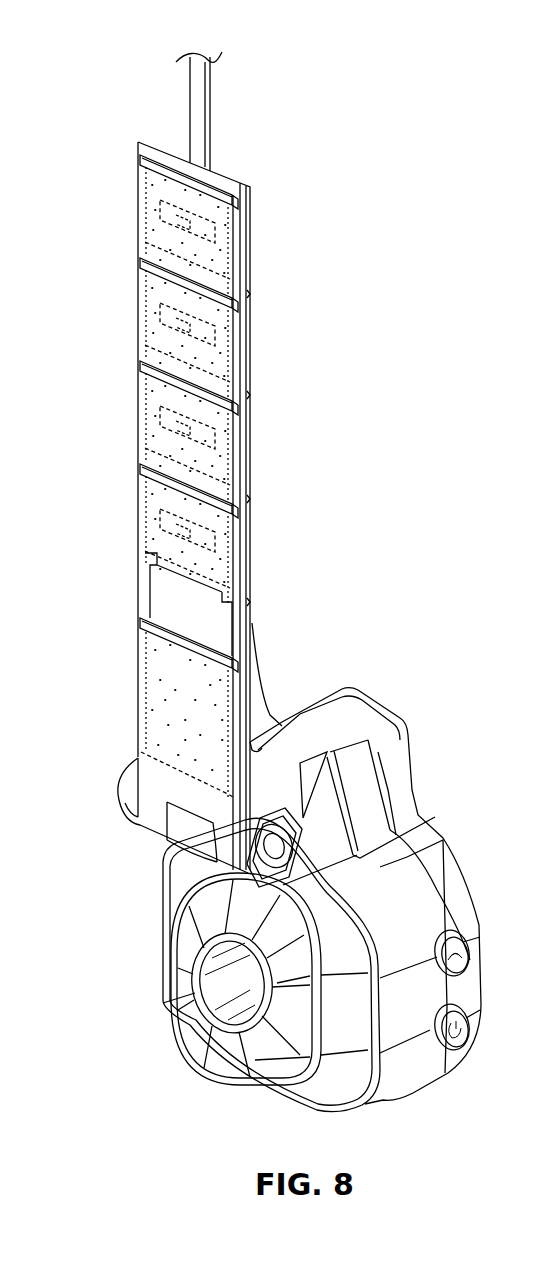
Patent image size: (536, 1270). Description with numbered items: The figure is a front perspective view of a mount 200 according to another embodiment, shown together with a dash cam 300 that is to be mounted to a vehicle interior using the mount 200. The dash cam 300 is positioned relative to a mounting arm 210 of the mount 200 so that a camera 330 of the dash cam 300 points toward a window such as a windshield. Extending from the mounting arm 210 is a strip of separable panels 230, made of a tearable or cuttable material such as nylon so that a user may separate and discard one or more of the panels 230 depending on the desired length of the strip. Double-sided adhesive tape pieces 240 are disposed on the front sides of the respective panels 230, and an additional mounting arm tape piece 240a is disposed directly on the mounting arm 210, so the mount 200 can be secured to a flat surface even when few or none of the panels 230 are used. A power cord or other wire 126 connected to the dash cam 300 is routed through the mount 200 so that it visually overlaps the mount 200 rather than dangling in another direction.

The wire 126 is at (206, 95).
The separable panels 230 is at (248, 313).
The double-sided adhesive tape pieces 240 is at (152, 288).
The mounting arm tape piece 240a is at (160, 670).
The mounting arm 210 is at (157, 788).
The mount 200 is at (326, 424).
The dash cam 300 is at (188, 1056).
The camera 330 is at (223, 992).